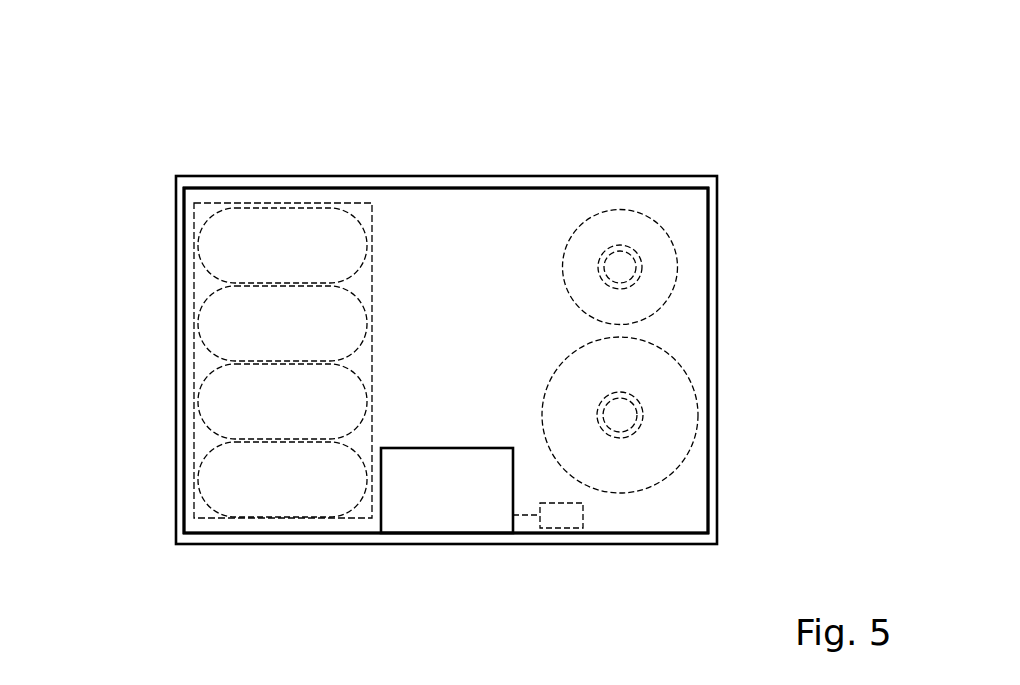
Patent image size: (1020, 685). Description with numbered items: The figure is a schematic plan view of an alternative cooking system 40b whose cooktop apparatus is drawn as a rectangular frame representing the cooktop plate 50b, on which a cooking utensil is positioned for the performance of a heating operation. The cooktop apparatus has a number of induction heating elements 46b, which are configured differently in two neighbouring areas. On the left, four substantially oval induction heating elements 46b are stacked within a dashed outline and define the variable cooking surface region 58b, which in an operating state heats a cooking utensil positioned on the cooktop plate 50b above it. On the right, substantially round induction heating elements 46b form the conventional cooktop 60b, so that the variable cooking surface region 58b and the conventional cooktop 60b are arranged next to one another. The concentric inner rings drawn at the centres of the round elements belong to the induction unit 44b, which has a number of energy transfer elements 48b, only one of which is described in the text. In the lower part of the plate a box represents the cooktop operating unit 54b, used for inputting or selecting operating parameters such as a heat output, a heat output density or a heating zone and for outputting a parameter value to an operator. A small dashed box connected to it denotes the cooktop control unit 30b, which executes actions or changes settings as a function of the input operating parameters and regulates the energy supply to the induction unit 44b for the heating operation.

The cooktop control unit 30b is at (563, 515).
The cooking system 40b is at (800, 191).
The induction unit 44b is at (678, 208).
The induction heating elements 46b is at (203, 271).
The energy transfer elements 48b is at (637, 272).
The cooktop plate 50b is at (460, 226).
The cooktop operating unit 54b is at (445, 492).
The variable cooking surface region 58b is at (290, 174).
The conventional cooktop 60b is at (620, 174).